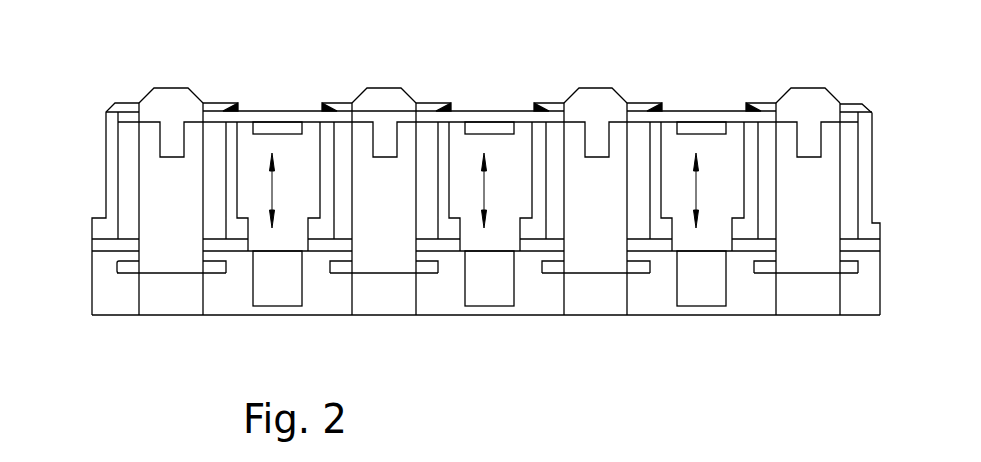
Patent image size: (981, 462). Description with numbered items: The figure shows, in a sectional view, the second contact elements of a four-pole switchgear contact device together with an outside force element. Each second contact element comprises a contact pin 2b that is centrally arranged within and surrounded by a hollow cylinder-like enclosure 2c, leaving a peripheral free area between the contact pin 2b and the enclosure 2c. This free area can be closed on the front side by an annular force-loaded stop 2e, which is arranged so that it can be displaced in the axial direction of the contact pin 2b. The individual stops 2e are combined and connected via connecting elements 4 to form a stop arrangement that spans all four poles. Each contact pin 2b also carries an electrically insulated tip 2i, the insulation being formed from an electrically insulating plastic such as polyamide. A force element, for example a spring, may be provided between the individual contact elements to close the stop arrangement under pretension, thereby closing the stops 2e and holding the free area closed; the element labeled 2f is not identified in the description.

The contact pin 2b is at (386, 244).
The enclosure 2c is at (325, 145).
The stop 2e is at (212, 120).
The end wall 2f is at (128, 168).
The tip 2i is at (382, 103).
The connecting element 4 is at (277, 123).